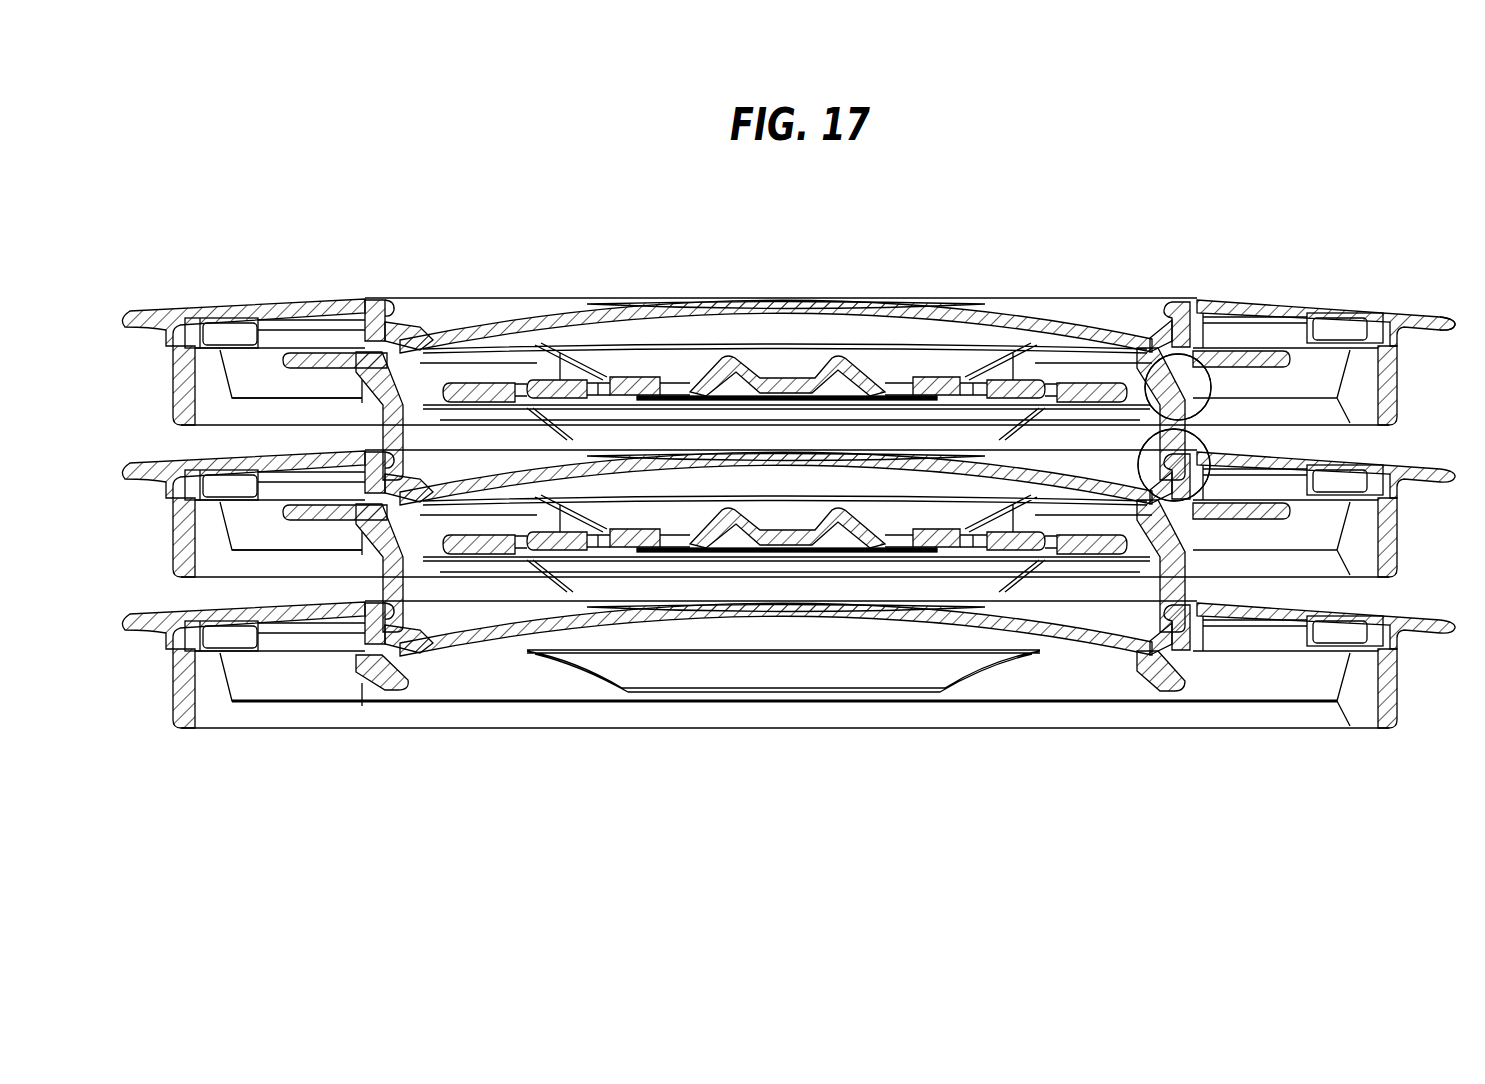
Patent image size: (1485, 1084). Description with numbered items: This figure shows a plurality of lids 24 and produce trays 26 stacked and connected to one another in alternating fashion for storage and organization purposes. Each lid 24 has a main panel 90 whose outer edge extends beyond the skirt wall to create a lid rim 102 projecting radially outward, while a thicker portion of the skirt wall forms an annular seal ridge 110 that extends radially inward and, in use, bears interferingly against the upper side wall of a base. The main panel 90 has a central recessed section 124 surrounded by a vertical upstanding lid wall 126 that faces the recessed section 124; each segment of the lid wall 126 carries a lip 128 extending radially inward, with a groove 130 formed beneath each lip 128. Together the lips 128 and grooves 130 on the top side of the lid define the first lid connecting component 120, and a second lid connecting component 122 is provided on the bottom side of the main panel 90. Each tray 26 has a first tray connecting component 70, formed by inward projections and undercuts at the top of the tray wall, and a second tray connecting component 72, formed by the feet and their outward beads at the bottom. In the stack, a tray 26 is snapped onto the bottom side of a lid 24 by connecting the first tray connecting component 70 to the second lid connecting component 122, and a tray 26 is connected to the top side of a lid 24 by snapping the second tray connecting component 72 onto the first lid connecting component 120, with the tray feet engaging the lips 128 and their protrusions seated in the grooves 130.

The vented lid 24 is at (784, 487).
The produce tray 26 is at (340, 378).
The first tray connecting component 70 is at (1212, 386).
The second tray connecting component 72 is at (1208, 445).
The main panel 90 is at (1255, 305).
The lid rim 102 is at (1433, 317).
The annular seal ridge 110 is at (1432, 328).
The first lid connecting component 120 is at (1255, 462).
The second lid connecting component 122 is at (1234, 387).
The recessed section 124 is at (540, 316).
The lid wall 126 is at (333, 306).
The lip 128 is at (398, 307).
The groove 130 is at (457, 313).